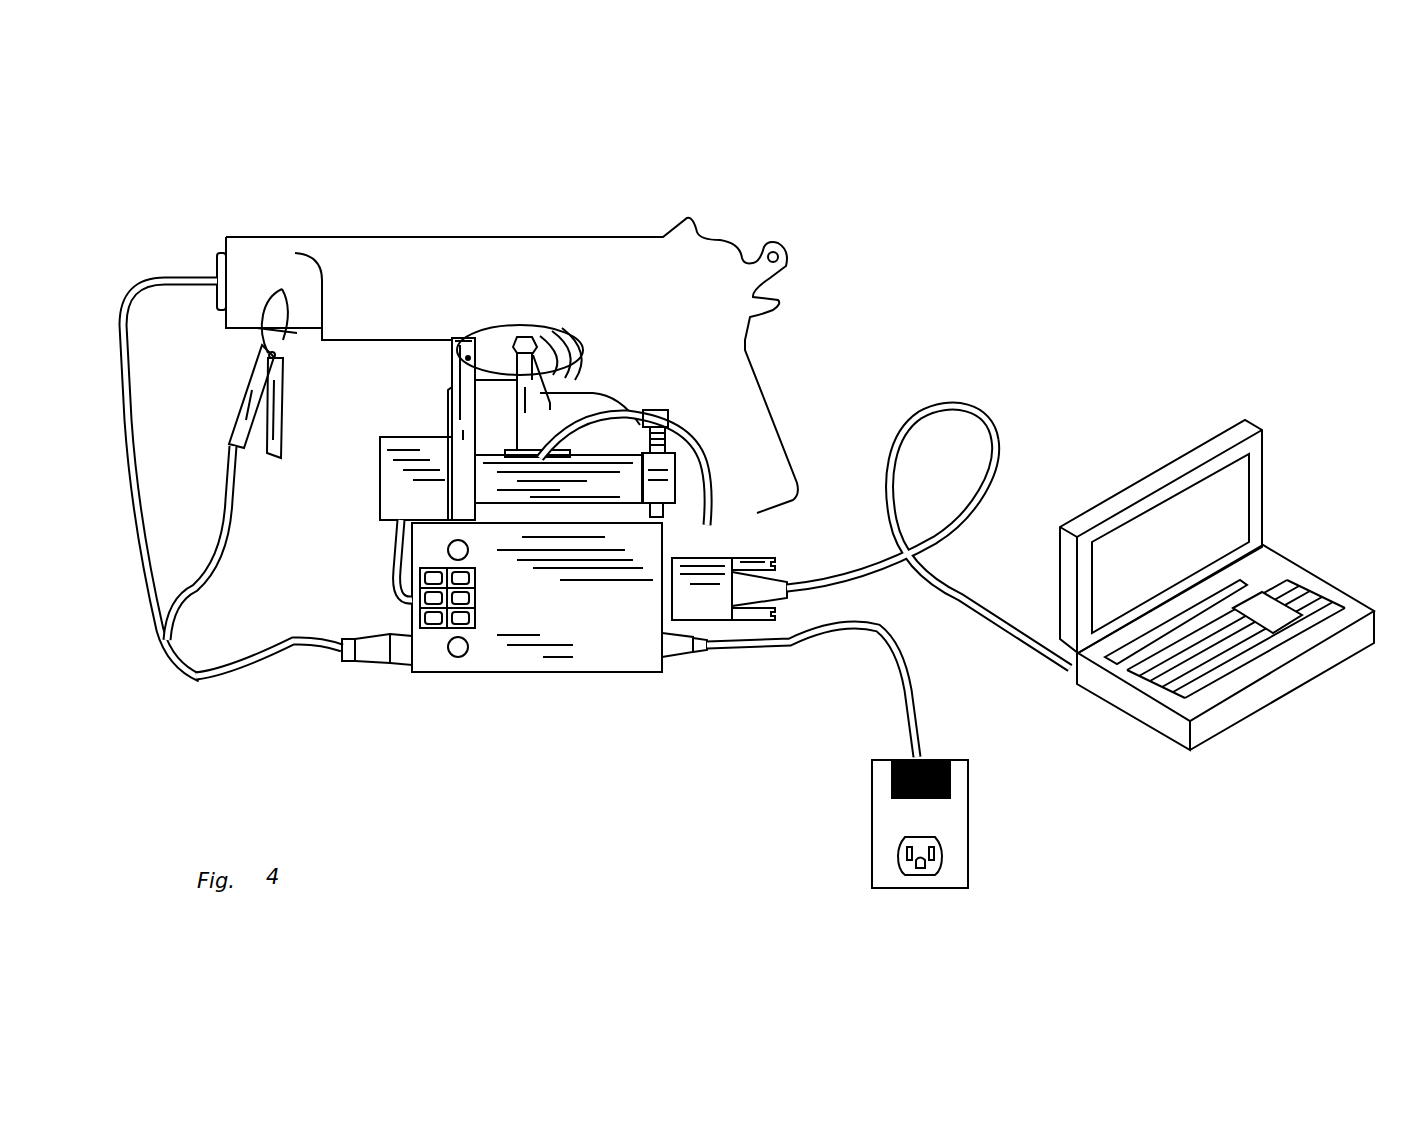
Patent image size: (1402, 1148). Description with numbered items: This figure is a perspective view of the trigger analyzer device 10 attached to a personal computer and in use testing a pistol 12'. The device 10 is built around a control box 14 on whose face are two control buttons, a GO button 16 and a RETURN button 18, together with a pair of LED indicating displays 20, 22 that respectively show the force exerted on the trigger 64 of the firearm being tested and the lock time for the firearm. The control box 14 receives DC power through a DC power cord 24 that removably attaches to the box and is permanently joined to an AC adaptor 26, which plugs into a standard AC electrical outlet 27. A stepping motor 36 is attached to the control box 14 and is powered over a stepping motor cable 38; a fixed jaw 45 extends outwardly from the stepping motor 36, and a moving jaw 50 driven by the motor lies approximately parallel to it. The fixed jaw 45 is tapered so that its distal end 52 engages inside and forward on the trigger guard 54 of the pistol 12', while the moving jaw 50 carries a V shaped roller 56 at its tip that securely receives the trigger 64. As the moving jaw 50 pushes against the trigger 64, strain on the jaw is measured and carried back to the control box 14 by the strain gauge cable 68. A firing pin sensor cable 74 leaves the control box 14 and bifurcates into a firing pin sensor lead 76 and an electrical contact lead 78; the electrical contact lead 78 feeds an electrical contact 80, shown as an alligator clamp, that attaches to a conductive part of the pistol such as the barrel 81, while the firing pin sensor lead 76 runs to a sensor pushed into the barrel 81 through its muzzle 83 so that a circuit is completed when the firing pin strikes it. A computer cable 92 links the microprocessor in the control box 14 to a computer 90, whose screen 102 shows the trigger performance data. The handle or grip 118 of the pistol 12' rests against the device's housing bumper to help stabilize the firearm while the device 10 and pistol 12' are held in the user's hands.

The trigger analyzer device 10 is at (1035, 294).
The pistol 12' is at (512, 338).
The control box 14 is at (620, 672).
The GO button 16 is at (465, 558).
The RETURN button 18 is at (460, 660).
The LED indicating display 20 is at (437, 628).
The LED indicating display 22 is at (475, 617).
The DC power cord 24 is at (760, 645).
The AC adaptor 26 is at (933, 757).
The AC electrical outlet 27 is at (942, 855).
The stepping motor 36 is at (380, 480).
The stepping motor cable 38 is at (388, 580).
The fixed jaw 45 is at (466, 330).
The moving jaw 50 is at (550, 393).
The distal end of fixed jaw 52 is at (453, 322).
The trigger guard 54 is at (455, 365).
The V shaped roller 56 is at (533, 417).
The trigger 64 is at (540, 327).
The strain gauge cable 68 is at (697, 457).
The firing pin sensor cable 74 is at (203, 680).
The firing pin sensor lead 76 is at (147, 603).
The electrical contact lead 78 is at (223, 560).
The electrical contact 80 is at (282, 342).
The barrel 81 is at (267, 248).
The muzzle 83 is at (217, 253).
The computer 90 is at (1220, 426).
The computer cable 92 is at (803, 587).
The screen 102 is at (1189, 487).
The handle or grip 118 is at (752, 358).